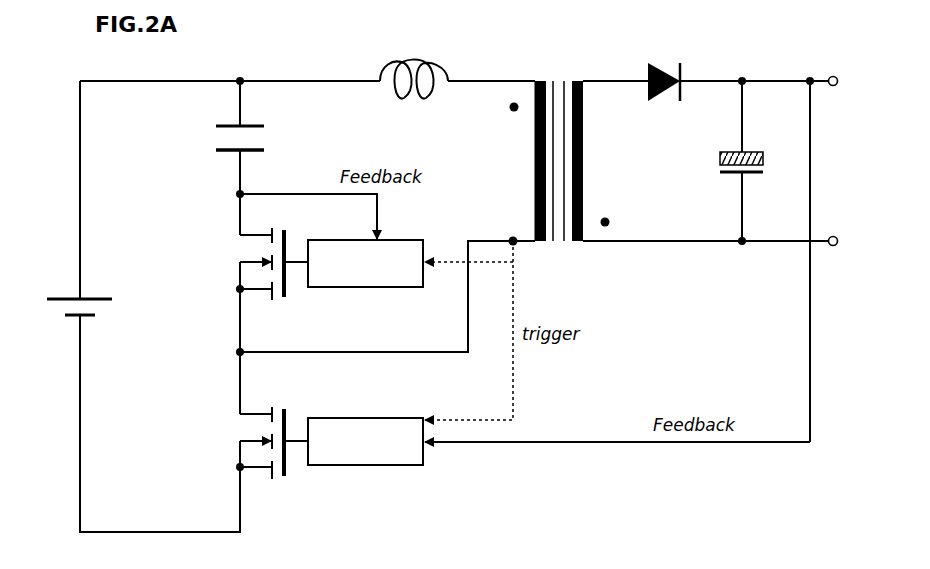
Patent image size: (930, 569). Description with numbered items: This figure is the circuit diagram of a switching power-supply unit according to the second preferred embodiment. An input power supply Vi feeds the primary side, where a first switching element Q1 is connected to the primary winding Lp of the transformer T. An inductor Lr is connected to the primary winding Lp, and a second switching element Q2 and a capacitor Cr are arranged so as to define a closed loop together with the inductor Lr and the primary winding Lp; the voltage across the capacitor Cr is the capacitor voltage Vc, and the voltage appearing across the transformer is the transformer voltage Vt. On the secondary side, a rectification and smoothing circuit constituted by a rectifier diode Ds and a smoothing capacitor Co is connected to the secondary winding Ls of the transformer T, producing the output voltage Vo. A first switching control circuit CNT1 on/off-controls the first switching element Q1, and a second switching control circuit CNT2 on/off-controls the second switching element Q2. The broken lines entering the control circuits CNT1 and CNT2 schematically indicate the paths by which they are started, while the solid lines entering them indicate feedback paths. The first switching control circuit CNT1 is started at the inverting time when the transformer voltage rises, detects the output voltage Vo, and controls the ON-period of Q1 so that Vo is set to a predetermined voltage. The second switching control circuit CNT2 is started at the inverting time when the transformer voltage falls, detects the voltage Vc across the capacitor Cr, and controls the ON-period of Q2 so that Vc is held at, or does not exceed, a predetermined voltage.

The input power supply Vi is at (70, 307).
The capacitor Cr is at (218, 140).
The voltage across the capacitor Cr Vc is at (260, 142).
The inductor Lr is at (414, 69).
The transformer T is at (563, 78).
The primary winding Lp is at (523, 161).
The secondary winding Ls is at (593, 161).
The transformer voltage Vt is at (502, 161).
The rectifier diode Ds is at (664, 70).
The smoothing capacitor Co is at (723, 161).
The output voltage Vo is at (791, 161).
The second switching element Q2 is at (248, 264).
The first switching element Q1 is at (248, 443).
The second switching control circuit CNT2 is at (376, 240).
The first switching control circuit CNT1 is at (559, 353).